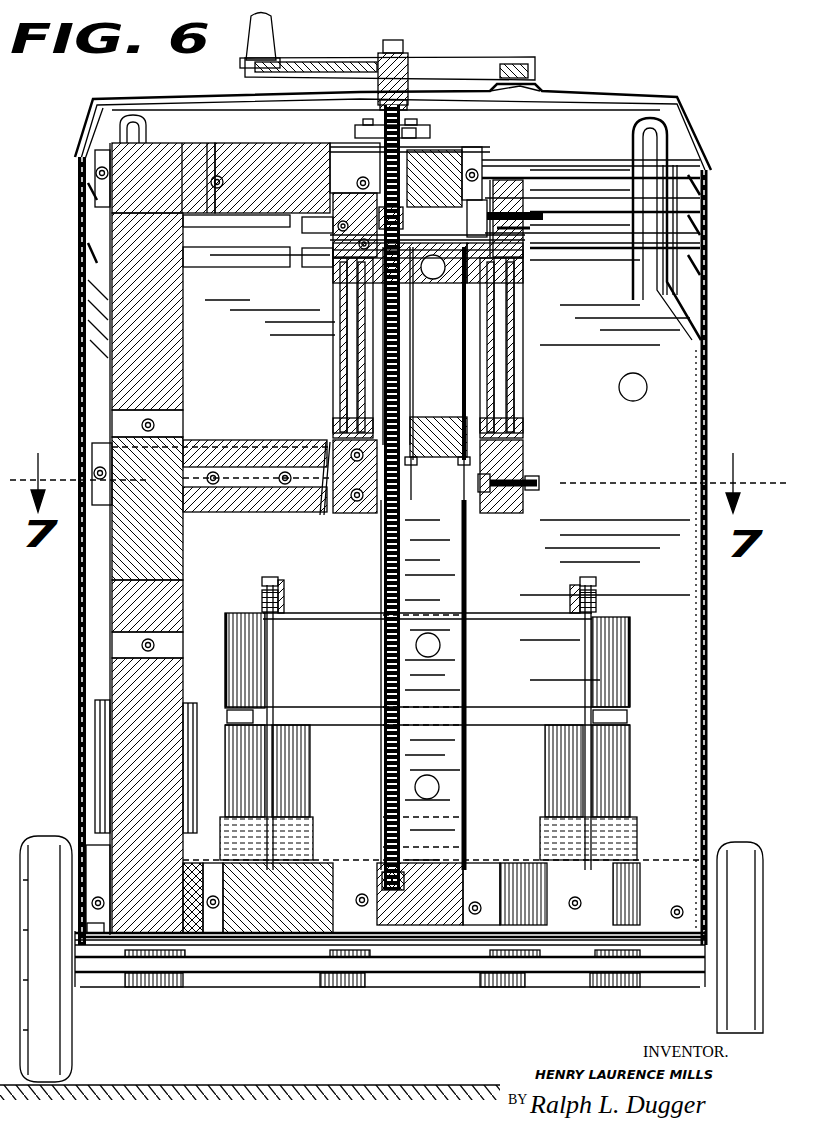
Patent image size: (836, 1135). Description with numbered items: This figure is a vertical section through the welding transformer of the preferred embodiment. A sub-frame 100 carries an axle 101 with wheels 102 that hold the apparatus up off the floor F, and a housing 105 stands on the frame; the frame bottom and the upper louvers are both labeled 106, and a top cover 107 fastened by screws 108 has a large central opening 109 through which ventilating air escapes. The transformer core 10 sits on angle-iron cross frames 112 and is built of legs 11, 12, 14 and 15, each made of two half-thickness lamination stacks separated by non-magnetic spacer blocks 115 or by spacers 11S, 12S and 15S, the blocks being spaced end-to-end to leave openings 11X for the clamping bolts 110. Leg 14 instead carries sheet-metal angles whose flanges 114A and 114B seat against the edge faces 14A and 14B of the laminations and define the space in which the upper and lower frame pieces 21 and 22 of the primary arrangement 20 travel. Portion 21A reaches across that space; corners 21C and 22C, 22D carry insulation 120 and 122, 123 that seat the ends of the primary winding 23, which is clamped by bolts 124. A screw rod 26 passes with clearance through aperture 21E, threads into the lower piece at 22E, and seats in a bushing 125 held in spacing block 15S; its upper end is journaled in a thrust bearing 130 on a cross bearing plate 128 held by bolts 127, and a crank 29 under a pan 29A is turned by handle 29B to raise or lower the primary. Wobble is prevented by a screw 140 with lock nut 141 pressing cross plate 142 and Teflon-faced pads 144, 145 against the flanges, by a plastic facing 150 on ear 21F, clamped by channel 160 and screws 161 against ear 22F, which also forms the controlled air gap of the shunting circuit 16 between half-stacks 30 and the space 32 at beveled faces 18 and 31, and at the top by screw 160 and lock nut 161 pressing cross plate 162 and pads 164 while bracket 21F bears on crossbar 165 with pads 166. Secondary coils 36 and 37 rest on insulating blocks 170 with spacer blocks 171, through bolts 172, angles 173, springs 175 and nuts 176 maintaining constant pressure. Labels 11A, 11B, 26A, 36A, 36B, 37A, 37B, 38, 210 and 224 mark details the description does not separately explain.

The core 10 is at (177, 141).
The core leg 11 is at (183, 418).
The side channel 11A is at (110, 393).
The frame block 11B is at (200, 512).
The spacer 11S is at (175, 320).
The opening 11X is at (170, 390).
The top leg 12 is at (222, 145).
The spacer 12S is at (280, 160).
The core leg 14 is at (465, 150).
The inner face 14A is at (402, 596).
The edge face 14B is at (468, 613).
The bottom leg 15 is at (222, 940).
The spacing block 15S is at (315, 940).
The shunting circuit 16 is at (248, 441).
The beveled face 18 is at (330, 440).
The primary arrangement 20 is at (535, 390).
The upper framework piece 21 is at (532, 252).
The interior portion 21A is at (466, 320).
The corner 21C is at (532, 245).
The aperture 21E is at (500, 185).
The inner bracket 21F is at (333, 200).
The lower framework piece 22 is at (525, 454).
The corner 22C is at (525, 419).
The corner 22D is at (338, 380).
The threaded portion 22E is at (525, 499).
The ear 22F is at (340, 516).
The primary winding 23 is at (525, 334).
The screw rod 26 is at (383, 584).
The bearing 26A is at (350, 145).
The crank 29 is at (305, 60).
The pan 29A is at (405, 55).
The handle 29B is at (270, 38).
The half-stacks 30 is at (360, 518).
The beveled face 31 is at (326, 519).
The space 32 is at (322, 519).
The secondary coil 36 is at (631, 734).
The spring part 36A is at (516, 781).
The spring part 36B is at (631, 764).
The secondary coil 37 is at (631, 630).
The spring part 37A is at (592, 664).
The spring part 37B is at (630, 654).
The guide plate 38 is at (96, 738).
The sub-frame 100 is at (105, 965).
The axle 101 is at (100, 975).
The wheels 102 is at (45, 836).
The housing 105 is at (708, 657).
The louvers 106 is at (88, 255).
The top cover 107 is at (600, 100).
The screws 108 is at (75, 158).
The central opening 109 is at (543, 92).
The bolts 110 is at (142, 426).
The cross frame 112 is at (78, 798).
The flange 114A is at (468, 554).
The outer flange 114B is at (468, 588).
The spacer blocks 115 is at (433, 280).
The insulation 120 is at (522, 270).
The insulation 122 is at (525, 436).
The insulation 123 is at (470, 393).
The bolts 124 is at (468, 357).
The bushing 125 is at (460, 925).
The bolts 127 is at (115, 98).
The cross bearing plate 128 is at (418, 132).
The thrust bearing 130 is at (403, 126).
The screw 140 is at (540, 483).
The lock nut 141 is at (530, 476).
The cross plate 142 is at (485, 503).
The bearing pads 144 is at (455, 500).
The Teflon facing 145 is at (420, 498).
The plastic facing 150 is at (372, 514).
The channel 160 is at (530, 185).
The screws 161 is at (543, 214).
The cross plate 162 is at (532, 229).
The pads 164 is at (497, 178).
The crossbar 165 is at (333, 228).
The pad 166 is at (403, 220).
The insulating cross blocks 170 is at (303, 828).
The spacer cross blocks 171 is at (227, 714).
The through bolts 172 is at (270, 684).
The angles 173 is at (284, 603).
The springs 175 is at (262, 600).
The nuts 176 is at (266, 584).
The ledge 210 is at (333, 265).
The collar 224 is at (436, 402).
The floor F is at (296, 1084).